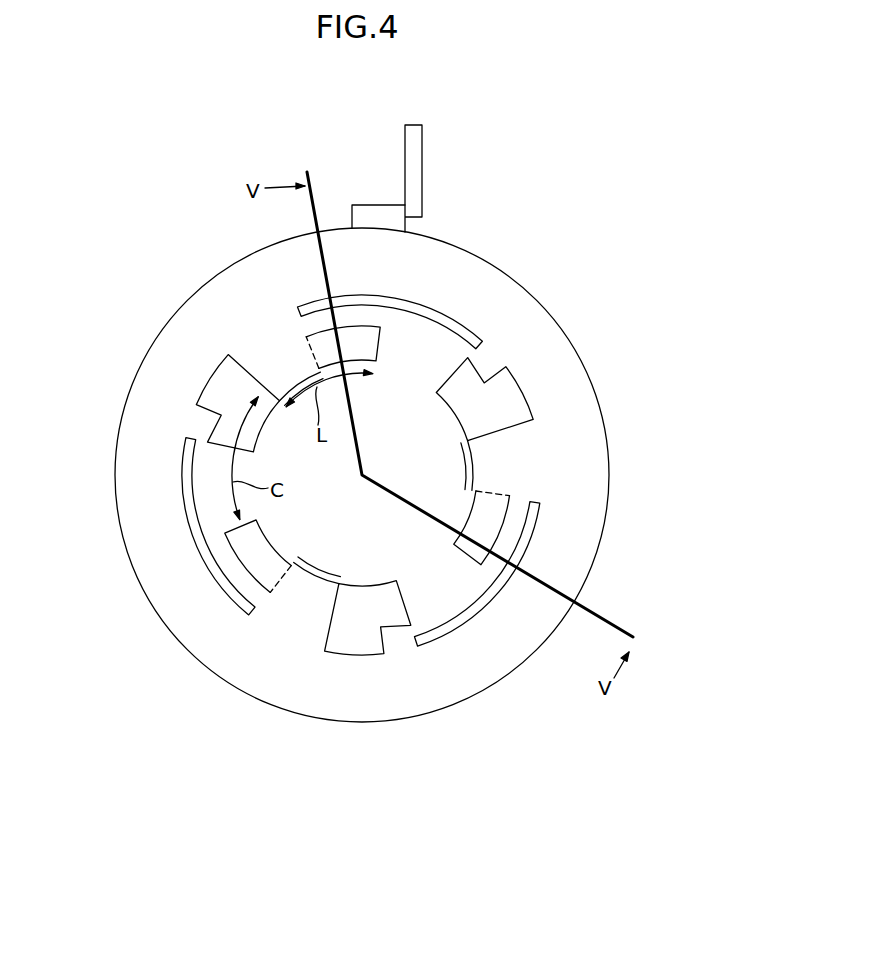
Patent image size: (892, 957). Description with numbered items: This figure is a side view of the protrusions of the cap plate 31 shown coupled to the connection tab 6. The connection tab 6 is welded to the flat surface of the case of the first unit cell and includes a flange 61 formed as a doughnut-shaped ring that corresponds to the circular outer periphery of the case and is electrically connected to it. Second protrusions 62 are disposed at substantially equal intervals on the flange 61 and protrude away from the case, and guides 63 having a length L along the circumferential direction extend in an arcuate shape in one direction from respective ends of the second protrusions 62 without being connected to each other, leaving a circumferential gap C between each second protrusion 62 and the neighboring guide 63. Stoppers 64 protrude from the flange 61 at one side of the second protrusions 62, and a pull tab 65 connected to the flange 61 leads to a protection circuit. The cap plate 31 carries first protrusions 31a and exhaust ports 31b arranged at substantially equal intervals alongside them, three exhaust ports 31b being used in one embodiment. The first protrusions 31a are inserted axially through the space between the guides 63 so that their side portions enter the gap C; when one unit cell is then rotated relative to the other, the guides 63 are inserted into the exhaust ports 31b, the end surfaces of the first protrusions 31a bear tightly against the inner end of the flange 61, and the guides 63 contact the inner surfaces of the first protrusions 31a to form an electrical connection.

The connection tab 6 is at (157, 625).
The flange 61 is at (135, 485).
The second protrusion 62 is at (293, 628).
The guide 63 is at (490, 530).
The stopper 64 is at (400, 642).
The pull tab 65 is at (413, 142).
The cap plate 31 is at (505, 368).
The first protrusion 31a is at (437, 370).
The exhaust port 31b is at (466, 413).